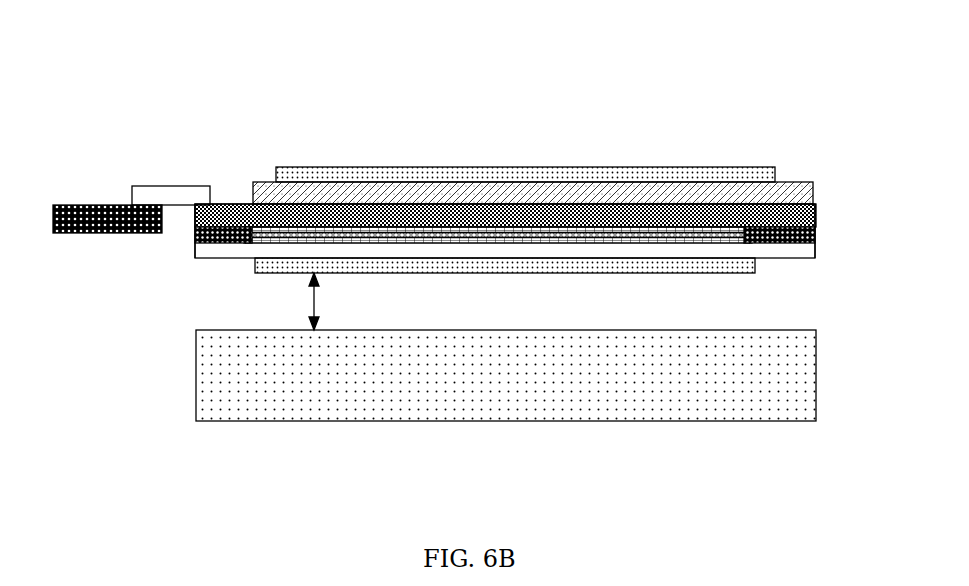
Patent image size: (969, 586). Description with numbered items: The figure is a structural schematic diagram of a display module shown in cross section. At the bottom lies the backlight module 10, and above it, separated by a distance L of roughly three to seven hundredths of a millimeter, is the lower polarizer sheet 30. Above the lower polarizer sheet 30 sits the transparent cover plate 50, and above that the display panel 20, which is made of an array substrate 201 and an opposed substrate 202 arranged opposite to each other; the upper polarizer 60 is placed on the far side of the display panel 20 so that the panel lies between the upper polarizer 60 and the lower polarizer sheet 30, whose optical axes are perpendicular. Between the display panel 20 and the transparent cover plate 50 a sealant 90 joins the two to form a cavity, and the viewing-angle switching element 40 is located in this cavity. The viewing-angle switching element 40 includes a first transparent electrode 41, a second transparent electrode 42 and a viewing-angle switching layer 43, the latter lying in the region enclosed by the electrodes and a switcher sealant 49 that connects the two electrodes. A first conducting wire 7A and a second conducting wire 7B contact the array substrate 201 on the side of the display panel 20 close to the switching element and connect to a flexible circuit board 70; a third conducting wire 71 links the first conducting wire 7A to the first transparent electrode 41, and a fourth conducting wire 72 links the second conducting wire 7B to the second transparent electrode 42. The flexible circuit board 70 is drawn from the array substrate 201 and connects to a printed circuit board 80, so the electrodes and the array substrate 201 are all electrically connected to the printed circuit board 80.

The backlight module 10 is at (518, 378).
The lower polarizer sheet 30 is at (403, 262).
The upper polarizer 60 is at (312, 175).
The display panel 20 is at (533, 110).
The array substrate 201 is at (593, 63).
The opposed substrate 202 is at (530, 195).
The transparent cover plate 50 is at (372, 250).
The sealant 90 is at (222, 228).
The viewing-angle switching element 40 is at (518, 166).
The first transparent electrode 41 is at (633, 228).
The viewing-angle switching layer 43 is at (662, 237).
The second transparent electrode 42 is at (705, 238).
The switcher sealant 49 is at (647, 125).
The third conducting wire 71 is at (238, 242).
The fourth conducting wire 72 is at (767, 240).
The first conducting wire 7A is at (195, 213).
The second conducting wire 7B is at (817, 220).
The flexible circuit board 70 is at (163, 198).
The printed circuit board 80 is at (82, 205).
The distance L is at (305, 301).